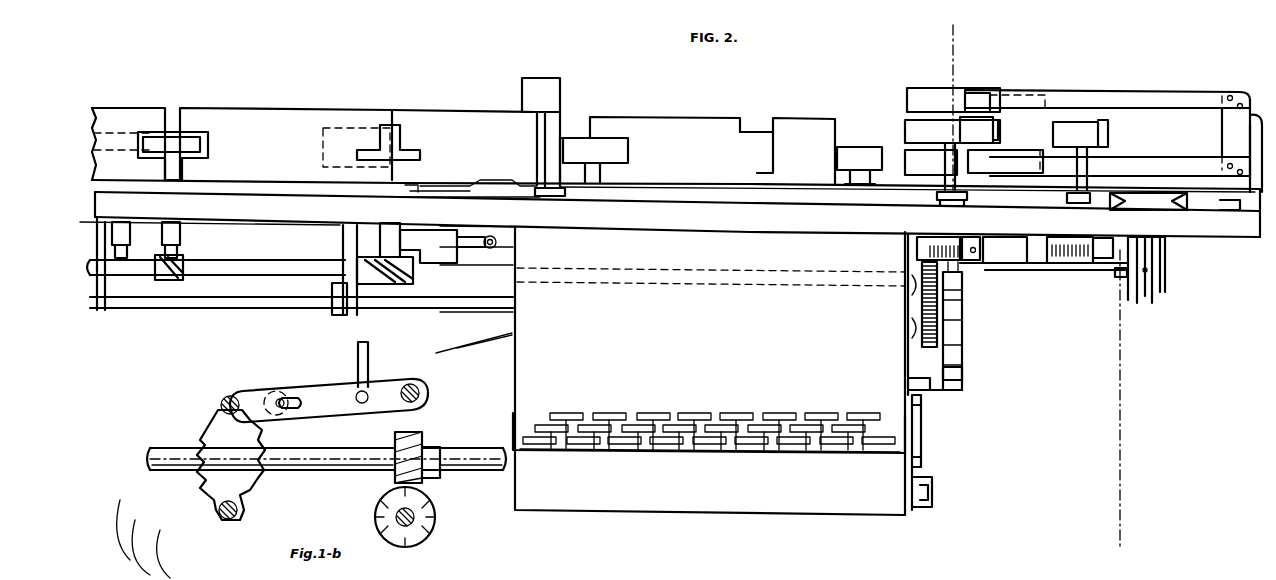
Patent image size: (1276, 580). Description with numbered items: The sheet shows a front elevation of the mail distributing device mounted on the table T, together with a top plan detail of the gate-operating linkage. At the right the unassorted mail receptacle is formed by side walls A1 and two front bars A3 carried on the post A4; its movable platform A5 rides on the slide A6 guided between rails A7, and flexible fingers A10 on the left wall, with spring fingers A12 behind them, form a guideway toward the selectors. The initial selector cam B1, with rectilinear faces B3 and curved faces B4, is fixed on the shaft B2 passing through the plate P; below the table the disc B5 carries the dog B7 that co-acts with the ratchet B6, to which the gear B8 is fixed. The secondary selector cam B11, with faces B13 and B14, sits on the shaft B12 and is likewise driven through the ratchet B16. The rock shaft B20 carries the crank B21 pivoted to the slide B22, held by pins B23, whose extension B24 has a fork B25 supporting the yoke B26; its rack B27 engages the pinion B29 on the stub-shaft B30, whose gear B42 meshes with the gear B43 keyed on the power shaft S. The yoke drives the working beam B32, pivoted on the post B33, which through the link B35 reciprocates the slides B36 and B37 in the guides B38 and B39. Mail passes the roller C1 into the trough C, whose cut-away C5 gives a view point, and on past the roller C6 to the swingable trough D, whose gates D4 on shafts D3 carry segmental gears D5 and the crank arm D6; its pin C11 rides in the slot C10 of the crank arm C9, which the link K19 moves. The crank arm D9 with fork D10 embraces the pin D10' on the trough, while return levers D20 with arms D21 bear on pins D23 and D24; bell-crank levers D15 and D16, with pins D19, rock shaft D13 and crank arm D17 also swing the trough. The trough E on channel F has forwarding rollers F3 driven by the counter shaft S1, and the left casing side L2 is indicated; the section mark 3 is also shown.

In FIG. 2, the trough E is at (280, 108).
In FIG. 2, the forwarding roller F3 is at (185, 135).
In FIG. 2, the swingable trough (master deflector) D is at (437, 110).
In FIG. 2, the gate D4 is at (522, 95).
In FIG. 2, the shaft D3 is at (562, 115).
In FIG. 1B, the shaft D3 is at (222, 400).
In FIG. 2, the trough C is at (808, 119).
In FIG. 2, the forwarding roller C6 is at (607, 150).
In FIG. 2, the cut-away portion C5 is at (770, 140).
In FIG. 2, the forwarding roller C1 is at (857, 147).
In FIG. 2, the front bar A3 is at (1149, 92).
In FIG. 2, the post A4 is at (1223, 108).
In FIG. 2, the side wall A1 is at (1252, 133).
In FIG. 2, the flexible finger A10 is at (976, 96).
In FIG. 2, the rectilinear face B13 is at (907, 105).
In FIG. 2, the curved face B14 is at (978, 118).
In FIG. 2, the rotatable cam B11 is at (925, 128).
In FIG. 2, the shaft B12 is at (955, 173).
In FIG. 2, the spring finger A12 is at (917, 92).
In FIG. 2, the rectilinear face B3 is at (1068, 122).
In FIG. 2, the curved face B4 is at (1100, 120).
In FIG. 2, the rotatable cam B1 is at (1108, 136).
In FIG. 2, the shaft B2 is at (1090, 155).
In FIG. 2, the plate P is at (790, 195).
In FIG. 2, the slide A6 is at (1165, 210).
In FIG. 2, the rail A7 is at (1124, 212).
In FIG. 2, the movable platform A5 is at (1195, 193).
In FIG. 2, the table T is at (1250, 240).
In FIG. 2, the fork D10 is at (472, 176).
In FIG. 2, the pin D10' is at (528, 201).
In FIG. 2, the return lever D20 is at (468, 178).
In FIG. 2, the crank arm D21 is at (420, 187).
In FIG. 2, the pin D24 is at (430, 180).
In FIG. 2, the pin D23 is at (464, 184).
In FIG. 2, the bell-crank lever D16 is at (425, 220).
In FIG. 2, the crank arm D9 is at (470, 216).
In FIG. 2, the bell-crank lever D15 is at (480, 237).
In FIG. 2, the depending pin D19 is at (390, 228).
In FIG. 2, the rock shaft D13 is at (432, 243).
In FIG. 2, the crank arm D17 is at (428, 262).
In FIG. 2, the channel F is at (256, 212).
In FIG. 2, the counter shaft S1 is at (296, 268).
In FIG. 2, the side of casing L2 is at (474, 343).
In FIG. 1B, the side of casing L2 is at (470, 344).
In FIG. 2, the power shaft S is at (737, 284).
In FIG. 1B, the power shaft S is at (465, 455).
In FIG. 2, the ratchet B16 is at (913, 250).
In FIG. 2, the gear B43 is at (910, 297).
In FIG. 2, the stub-shaft B30 is at (913, 320).
In FIG. 2, the gear B42 is at (925, 348).
In FIG. 2, the pinion B29 is at (966, 313).
In FIG. 2, the rack B27 is at (955, 380).
In FIG. 2, the yoke B26 is at (963, 376).
In FIG. 2, the fork B25 is at (963, 388).
In FIG. 2, the extension B24 is at (945, 390).
In FIG. 2, the pin B23 is at (925, 400).
In FIG. 2, the slide B22 is at (925, 424).
In FIG. 2, the rock shaft B20 is at (935, 487).
In FIG. 2, the crank B21 is at (922, 505).
In FIG. 2, the disc B5 is at (1035, 240).
In FIG. 2, the post B33 is at (1027, 252).
In FIG. 2, the ratchet B6 is at (1070, 245).
In FIG. 2, the dog B7 is at (1050, 264).
In FIG. 2, the gear B8 is at (1080, 264).
In FIG. 2, the slide B37 is at (965, 265).
In FIG. 2, the guide B39 is at (992, 268).
In FIG. 2, the working beam B32 is at (1060, 268).
In FIG. 2, the slide B36 is at (1100, 266).
In FIG. 2, the link B35 is at (1122, 275).
In FIG. 2, the guide B38 is at (1156, 303).
In FIG. 2, the section line 3 is at (1036, 286).
In FIG. 1B, the segmental gear D5 is at (268, 476).
In FIG. 1B, the crank arm D6 is at (252, 390).
In FIG. 1B, the crank arm C9 is at (320, 400).
In FIG. 1B, the slot C10 is at (300, 398).
In FIG. 1B, the pin C11 is at (281, 398).
In FIG. 1B, the link K19 is at (368, 366).